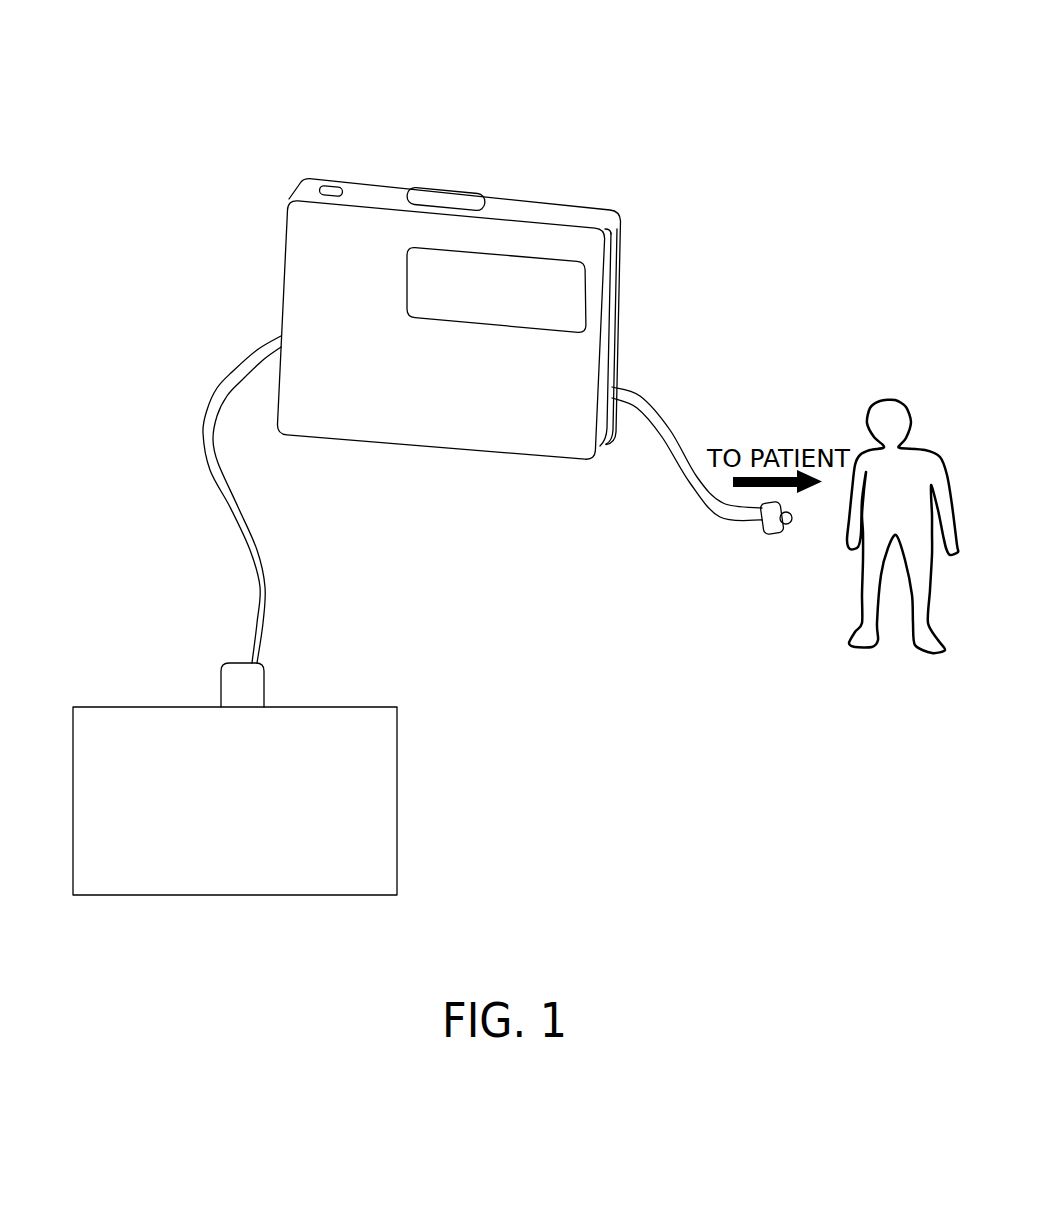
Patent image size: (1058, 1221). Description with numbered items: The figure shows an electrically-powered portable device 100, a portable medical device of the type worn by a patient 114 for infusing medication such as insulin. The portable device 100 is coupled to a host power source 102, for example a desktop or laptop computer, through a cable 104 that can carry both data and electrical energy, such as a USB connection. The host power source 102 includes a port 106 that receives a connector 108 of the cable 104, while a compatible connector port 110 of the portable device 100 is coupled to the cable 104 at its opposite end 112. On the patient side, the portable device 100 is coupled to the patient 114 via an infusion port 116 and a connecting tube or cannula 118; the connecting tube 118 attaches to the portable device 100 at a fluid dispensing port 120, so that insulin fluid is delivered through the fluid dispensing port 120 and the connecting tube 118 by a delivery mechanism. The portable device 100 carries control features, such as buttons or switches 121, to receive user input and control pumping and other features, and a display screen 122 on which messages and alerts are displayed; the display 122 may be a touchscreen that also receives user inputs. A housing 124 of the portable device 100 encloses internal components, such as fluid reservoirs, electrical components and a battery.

The portable device 100 is at (652, 175).
The host power source 102 is at (390, 883).
The cable 104 is at (235, 525).
The port 106 is at (253, 716).
The connector 108 is at (222, 667).
The connector port 110 is at (283, 334).
The opposite end 112 is at (278, 335).
The patient 114 is at (853, 643).
The infusion port 116 is at (773, 534).
The connecting tube 118 is at (697, 493).
The fluid dispensing port 120 is at (622, 388).
The buttons or switches 121 is at (458, 192).
The display screen 122 is at (410, 282).
The housing 124 is at (315, 442).